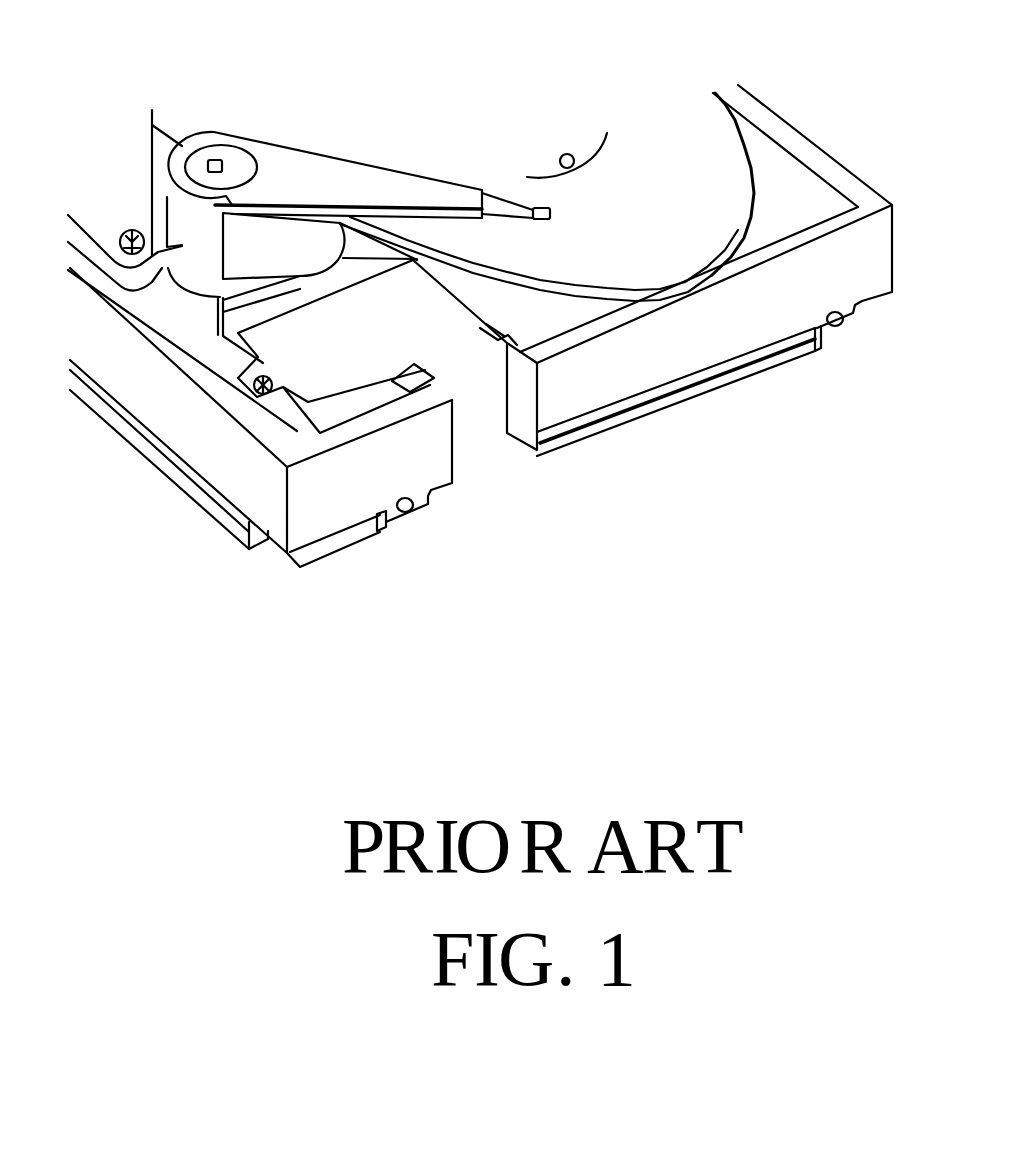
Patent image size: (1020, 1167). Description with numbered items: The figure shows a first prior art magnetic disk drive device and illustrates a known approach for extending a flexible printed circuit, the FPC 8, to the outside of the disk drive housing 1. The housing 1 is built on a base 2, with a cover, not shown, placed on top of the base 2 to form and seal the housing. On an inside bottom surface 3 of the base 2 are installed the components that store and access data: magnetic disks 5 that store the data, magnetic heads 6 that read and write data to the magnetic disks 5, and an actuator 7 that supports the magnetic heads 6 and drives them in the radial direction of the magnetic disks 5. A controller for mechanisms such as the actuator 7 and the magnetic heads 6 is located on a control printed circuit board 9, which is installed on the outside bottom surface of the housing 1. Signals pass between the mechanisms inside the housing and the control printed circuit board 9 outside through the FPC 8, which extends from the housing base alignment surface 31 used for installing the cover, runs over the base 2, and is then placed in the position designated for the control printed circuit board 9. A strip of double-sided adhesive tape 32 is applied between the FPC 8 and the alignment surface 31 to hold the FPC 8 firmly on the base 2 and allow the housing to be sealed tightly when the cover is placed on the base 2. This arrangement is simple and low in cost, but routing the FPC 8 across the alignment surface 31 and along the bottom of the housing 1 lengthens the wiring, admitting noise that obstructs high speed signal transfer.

The disk drive housing 1 is at (860, 307).
The base 2 is at (820, 147).
The inside bottom surface 3 is at (177, 322).
The magnetic disk 5 is at (677, 115).
The magnetic head 6 is at (563, 217).
The actuator 7 is at (261, 138).
The FPC 8 is at (330, 357).
The control printed circuit board 9 is at (600, 437).
The alignment surface 31 is at (420, 398).
The double-sided adhesive tape 32 is at (403, 377).